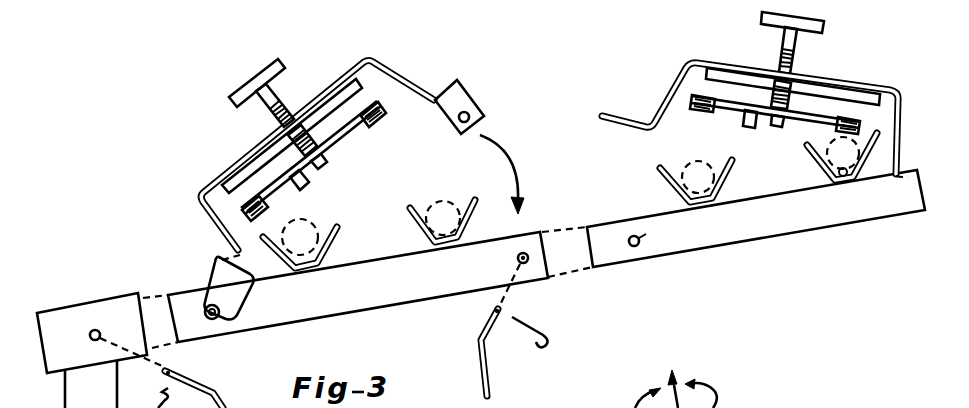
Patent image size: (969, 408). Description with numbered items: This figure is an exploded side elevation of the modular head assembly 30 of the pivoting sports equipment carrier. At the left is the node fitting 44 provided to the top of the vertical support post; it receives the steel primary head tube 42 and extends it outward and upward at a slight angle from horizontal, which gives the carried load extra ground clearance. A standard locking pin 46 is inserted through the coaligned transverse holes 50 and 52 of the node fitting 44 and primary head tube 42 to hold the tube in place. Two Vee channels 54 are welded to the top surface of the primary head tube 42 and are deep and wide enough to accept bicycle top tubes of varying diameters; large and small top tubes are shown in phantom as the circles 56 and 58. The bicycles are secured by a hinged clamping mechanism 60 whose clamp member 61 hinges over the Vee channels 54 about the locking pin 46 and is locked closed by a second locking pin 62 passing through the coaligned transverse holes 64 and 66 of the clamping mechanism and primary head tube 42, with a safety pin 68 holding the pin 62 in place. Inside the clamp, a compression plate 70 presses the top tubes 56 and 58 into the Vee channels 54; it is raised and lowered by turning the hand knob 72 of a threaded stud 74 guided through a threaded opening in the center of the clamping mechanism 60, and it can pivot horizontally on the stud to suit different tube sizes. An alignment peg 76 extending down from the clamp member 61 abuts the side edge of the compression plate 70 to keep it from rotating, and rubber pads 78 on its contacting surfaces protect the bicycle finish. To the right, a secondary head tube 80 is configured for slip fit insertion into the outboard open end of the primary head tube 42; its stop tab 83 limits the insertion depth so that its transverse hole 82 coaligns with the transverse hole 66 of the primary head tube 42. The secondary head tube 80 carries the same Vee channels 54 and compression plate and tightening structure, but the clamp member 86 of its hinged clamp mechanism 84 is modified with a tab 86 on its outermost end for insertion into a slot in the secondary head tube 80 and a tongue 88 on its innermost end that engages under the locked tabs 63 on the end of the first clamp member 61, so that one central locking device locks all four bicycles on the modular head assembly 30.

The modular head assembly 30 is at (564, 115).
The primary head tube 42 is at (393, 294).
The node fitting 44 is at (44, 312).
The locking pin 46 is at (221, 386).
The transverse hole 50 is at (97, 330).
The transverse hole 52 is at (232, 314).
The Vee channels 54 is at (410, 240).
The large diameter bicycle top tube 56 is at (303, 221).
The small diameter bicycle top tube 58 is at (441, 200).
The hinged clamping mechanism 60 is at (400, 58).
The clamp member 61 is at (414, 87).
The second locking pin 62 is at (490, 343).
The locked tabs 63 is at (462, 88).
The transverse hole 64 is at (483, 114).
The transverse hole 66 is at (518, 258).
The safety pin 68 is at (538, 327).
The compression plate 70 is at (351, 132).
The hand knob 72 is at (233, 97).
The threaded stud 74 is at (275, 116).
The alignment peg 76 is at (323, 128).
The rubber pads 78 is at (382, 114).
The secondary head tube 80 is at (786, 224).
The transverse hole 82 is at (656, 230).
The stop tab 83 is at (650, 258).
The hinged clamp mechanism 84 is at (663, 52).
The clamp member 86 is at (906, 92).
The tongue 88 is at (623, 108).